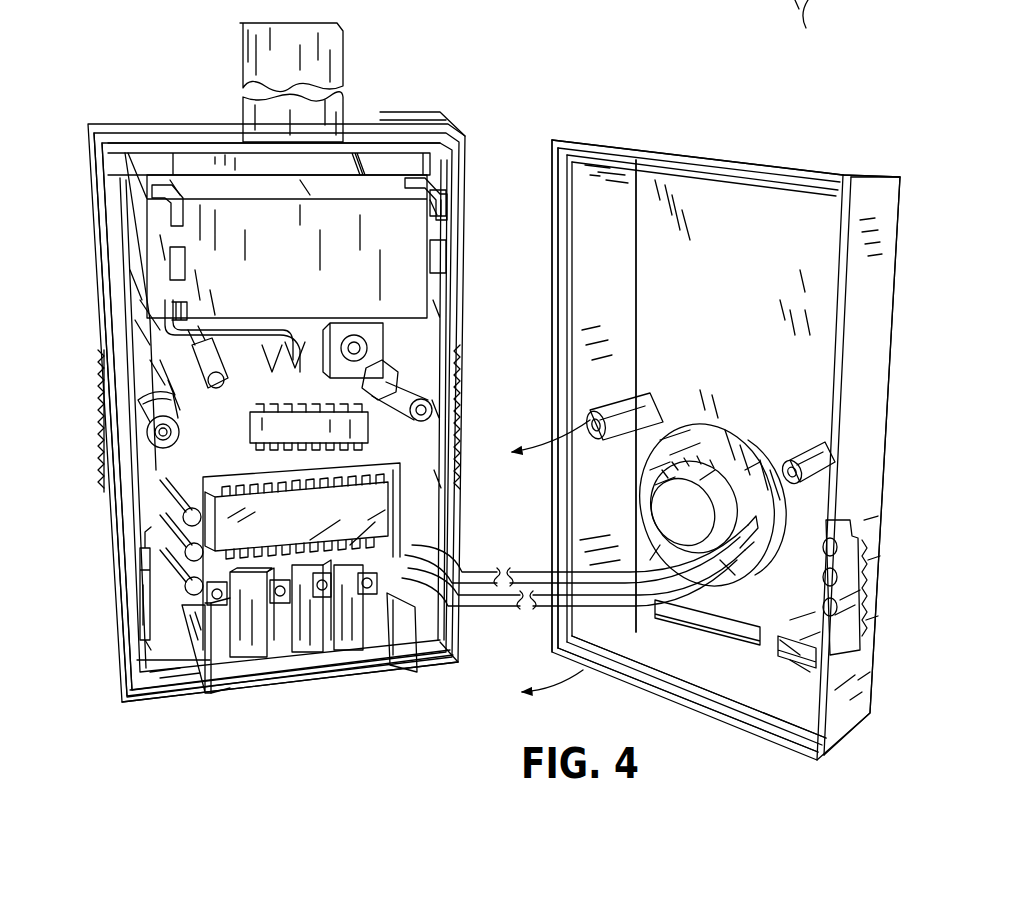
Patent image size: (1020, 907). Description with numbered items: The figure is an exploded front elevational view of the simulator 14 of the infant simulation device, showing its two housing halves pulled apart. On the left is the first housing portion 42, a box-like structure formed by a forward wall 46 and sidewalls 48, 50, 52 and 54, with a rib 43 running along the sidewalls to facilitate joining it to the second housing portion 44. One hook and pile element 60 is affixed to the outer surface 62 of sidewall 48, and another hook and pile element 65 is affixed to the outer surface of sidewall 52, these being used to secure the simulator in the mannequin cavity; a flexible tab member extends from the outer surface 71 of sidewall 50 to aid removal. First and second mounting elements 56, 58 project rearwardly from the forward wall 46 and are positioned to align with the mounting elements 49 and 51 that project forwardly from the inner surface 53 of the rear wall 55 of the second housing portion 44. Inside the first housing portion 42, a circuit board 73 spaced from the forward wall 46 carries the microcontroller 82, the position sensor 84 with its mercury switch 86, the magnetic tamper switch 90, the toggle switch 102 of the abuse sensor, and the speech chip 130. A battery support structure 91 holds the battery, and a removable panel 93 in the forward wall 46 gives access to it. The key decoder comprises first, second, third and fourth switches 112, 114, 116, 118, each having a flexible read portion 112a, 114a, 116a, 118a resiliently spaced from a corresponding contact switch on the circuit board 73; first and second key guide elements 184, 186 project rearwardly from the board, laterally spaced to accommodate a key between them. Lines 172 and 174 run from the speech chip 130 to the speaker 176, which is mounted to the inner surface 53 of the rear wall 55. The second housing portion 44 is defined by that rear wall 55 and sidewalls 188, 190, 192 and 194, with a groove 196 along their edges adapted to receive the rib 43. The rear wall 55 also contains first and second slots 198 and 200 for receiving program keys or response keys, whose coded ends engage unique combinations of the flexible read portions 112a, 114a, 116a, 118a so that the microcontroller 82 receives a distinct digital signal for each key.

The simulator 14 is at (798, 151).
The first housing portion 42 is at (86, 121).
The rib 43 is at (466, 160).
The second housing portion 44 is at (678, 146).
The forward wall 46 is at (137, 353).
The sidewall 48 is at (93, 194).
The mounting element 49 is at (640, 400).
The sidewall 50 is at (425, 116).
The mounting element 51 is at (800, 456).
The sidewall 52 is at (428, 551).
The inner surface 53 is at (735, 410).
The sidewall 54 is at (130, 700).
The rear wall 55 is at (738, 200).
The first mounting element 56 is at (152, 434).
The second mounting element 58 is at (432, 393).
The hook and pile element 60 is at (100, 397).
The outer surface 62 is at (98, 244).
The hook and pile element 65 is at (466, 440).
The outer surface 71 is at (160, 125).
The circuit board 73 is at (181, 523).
The microcontroller 82 is at (250, 438).
The position sensor 84 is at (216, 354).
The mercury switch 86 is at (222, 398).
The tamper switch 90 is at (150, 612).
The battery support structure 91 is at (287, 236).
The removable panel 93 is at (212, 125).
The toggle switch 102 is at (390, 353).
The first switch 112 is at (226, 662).
The flexible read portion 112a is at (240, 650).
The second switch 114 is at (286, 660).
The flexible read portion 114a is at (298, 650).
The third switch 116 is at (332, 655).
The flexible read portion 116a is at (350, 640).
The fourth switch 118 is at (374, 655).
The flexible read portion 118a is at (412, 645).
The speech chip 130 is at (301, 556).
The line 172 is at (540, 573).
The line 174 is at (673, 597).
The speaker 176 is at (702, 432).
The first key guide element 184 is at (175, 700).
The second key guide element 186 is at (462, 653).
The sidewall 188 is at (607, 396).
The sidewall 190 is at (847, 174).
The sidewall 192 is at (862, 466).
The sidewall 194 is at (762, 728).
The groove 196 is at (560, 297).
The first slot 198 is at (712, 632).
The second slot 200 is at (800, 640).